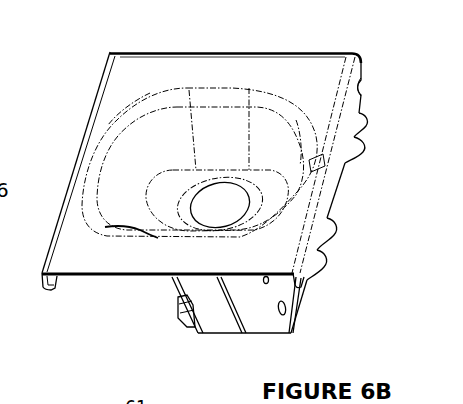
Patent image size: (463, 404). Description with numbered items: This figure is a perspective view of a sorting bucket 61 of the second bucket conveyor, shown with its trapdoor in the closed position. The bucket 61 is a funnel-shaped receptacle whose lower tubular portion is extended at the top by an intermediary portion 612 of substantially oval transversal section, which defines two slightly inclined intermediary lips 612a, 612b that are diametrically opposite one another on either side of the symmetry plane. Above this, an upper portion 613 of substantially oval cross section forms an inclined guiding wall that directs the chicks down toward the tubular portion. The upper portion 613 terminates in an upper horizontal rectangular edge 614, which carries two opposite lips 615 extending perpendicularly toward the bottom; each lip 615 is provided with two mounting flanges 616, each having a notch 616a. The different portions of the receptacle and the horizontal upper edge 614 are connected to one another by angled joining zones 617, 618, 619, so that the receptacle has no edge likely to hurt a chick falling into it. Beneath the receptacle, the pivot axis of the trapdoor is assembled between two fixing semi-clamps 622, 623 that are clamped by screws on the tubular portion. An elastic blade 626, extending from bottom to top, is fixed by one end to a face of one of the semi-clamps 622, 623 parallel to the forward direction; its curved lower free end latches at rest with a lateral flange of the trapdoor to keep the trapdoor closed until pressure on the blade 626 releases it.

The sorting bucket 61 is at (192, 56).
The intermediary portion 612 is at (174, 199).
The intermediary lip 612a is at (164, 193).
The intermediary lip 612b is at (270, 195).
The upper portion 613 is at (228, 187).
The upper horizontal rectangular edge 614 is at (250, 58).
The lip 615 is at (364, 83).
The mounting flange 616 is at (362, 120).
The notch 616a is at (360, 145).
The angled joining zone 617 is at (284, 136).
The angled joining zone 618 is at (190, 193).
The angled joining zone 619 is at (157, 108).
The fixing semi-clamp 622 is at (221, 313).
The fixing semi-clamp 623 is at (280, 295).
The elastic blade 626 is at (181, 300).